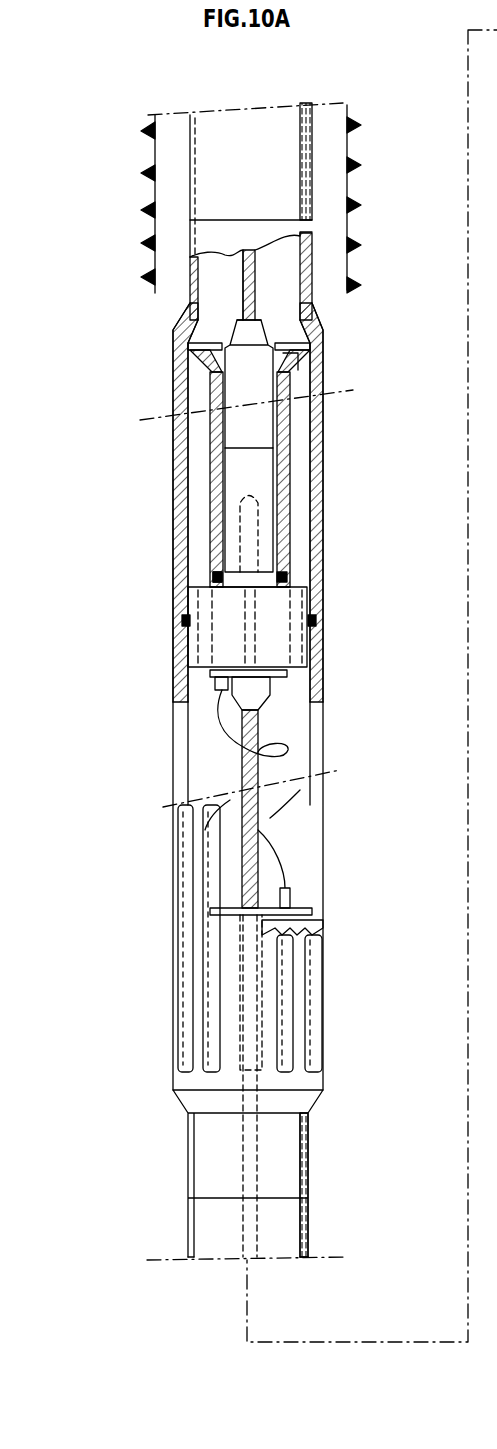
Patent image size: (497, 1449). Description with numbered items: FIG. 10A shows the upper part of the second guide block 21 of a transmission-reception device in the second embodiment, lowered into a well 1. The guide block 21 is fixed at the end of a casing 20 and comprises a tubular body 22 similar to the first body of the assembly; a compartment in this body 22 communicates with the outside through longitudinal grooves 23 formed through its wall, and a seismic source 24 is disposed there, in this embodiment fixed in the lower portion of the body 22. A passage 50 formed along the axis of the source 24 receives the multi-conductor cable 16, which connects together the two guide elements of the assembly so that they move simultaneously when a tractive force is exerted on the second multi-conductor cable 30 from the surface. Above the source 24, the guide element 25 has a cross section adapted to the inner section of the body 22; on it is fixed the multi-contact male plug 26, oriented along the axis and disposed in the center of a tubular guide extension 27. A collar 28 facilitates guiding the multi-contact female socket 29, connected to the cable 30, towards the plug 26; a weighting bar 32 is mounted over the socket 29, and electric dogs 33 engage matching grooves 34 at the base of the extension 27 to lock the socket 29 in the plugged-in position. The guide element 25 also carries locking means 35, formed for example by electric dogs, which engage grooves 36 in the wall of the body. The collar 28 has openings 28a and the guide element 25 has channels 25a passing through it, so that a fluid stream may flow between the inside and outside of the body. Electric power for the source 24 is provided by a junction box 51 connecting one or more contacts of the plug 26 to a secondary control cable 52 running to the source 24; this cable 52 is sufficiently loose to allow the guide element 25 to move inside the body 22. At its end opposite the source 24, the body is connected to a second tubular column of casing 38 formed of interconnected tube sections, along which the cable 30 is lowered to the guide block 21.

The well 1 is at (175, 158).
The second tubular column of casing 38 is at (205, 185).
The second multi-conductor cable 30 is at (190, 259).
The grooves 34 is at (190, 333).
The collar 28 is at (190, 360).
The openings 28a is at (300, 358).
The weighting bar 32 is at (262, 430).
The tubular guide extension 27 is at (212, 457).
The multi-contact female socket 29 is at (275, 468).
The tubular body 22 is at (175, 513).
The multi-contact male plug 26 is at (258, 537).
The electric dogs 33 is at (208, 574).
The guide element 25 is at (220, 618).
The locking means 35 is at (182, 622).
The grooves 36 is at (316, 622).
The channels 25a is at (305, 690).
The second guide block 21 is at (130, 665).
The junction box 51 is at (232, 683).
The secondary control cable 52 is at (268, 750).
The multi-conductor cable 16 is at (258, 832).
The seismic source 24 is at (312, 912).
The passage 50 is at (263, 925).
The longitudinal grooves 23 is at (205, 955).
The casing 20 is at (205, 1232).